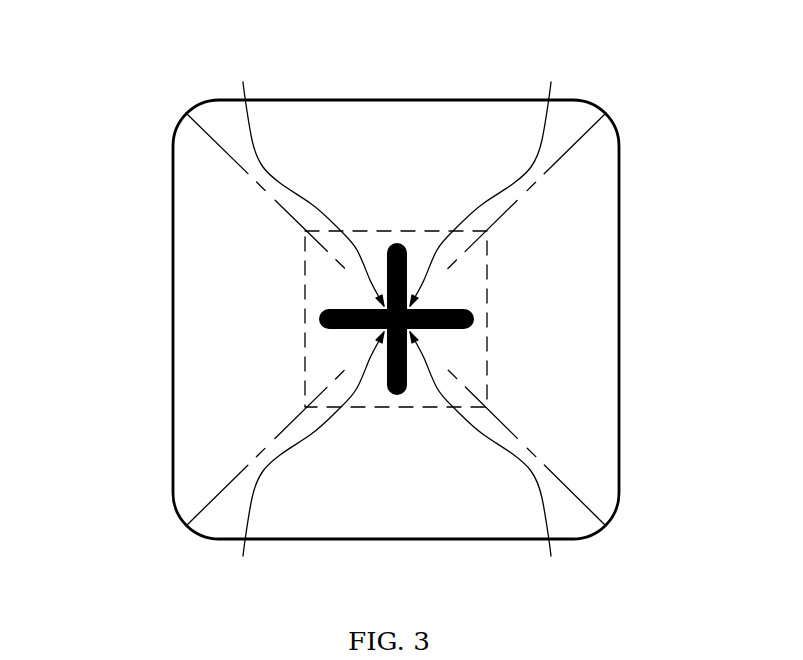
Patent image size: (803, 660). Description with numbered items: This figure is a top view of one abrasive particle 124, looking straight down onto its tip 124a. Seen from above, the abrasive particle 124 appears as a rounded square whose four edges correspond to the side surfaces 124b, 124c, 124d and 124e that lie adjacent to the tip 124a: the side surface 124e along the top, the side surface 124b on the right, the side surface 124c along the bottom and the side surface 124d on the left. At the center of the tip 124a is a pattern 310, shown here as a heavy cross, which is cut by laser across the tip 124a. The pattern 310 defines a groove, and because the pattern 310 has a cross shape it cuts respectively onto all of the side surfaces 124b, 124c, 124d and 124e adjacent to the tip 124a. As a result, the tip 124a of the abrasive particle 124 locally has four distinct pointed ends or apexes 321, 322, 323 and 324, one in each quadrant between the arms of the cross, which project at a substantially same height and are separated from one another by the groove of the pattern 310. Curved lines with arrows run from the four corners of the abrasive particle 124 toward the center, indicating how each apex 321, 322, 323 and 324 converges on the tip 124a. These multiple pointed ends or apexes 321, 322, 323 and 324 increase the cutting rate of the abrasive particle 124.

The abrasive particle 124 is at (375, 299).
The tip 124a is at (417, 333).
The side surface 124b is at (572, 270).
The side surface 124c is at (408, 475).
The side surface 124d is at (213, 302).
The side surface 124e is at (397, 158).
The pattern 310 is at (487, 319).
The pointed end or apex 321 is at (492, 464).
The pointed end or apex 322 is at (302, 464).
The pointed end or apex 323 is at (302, 179).
The pointed end or apex 324 is at (491, 179).